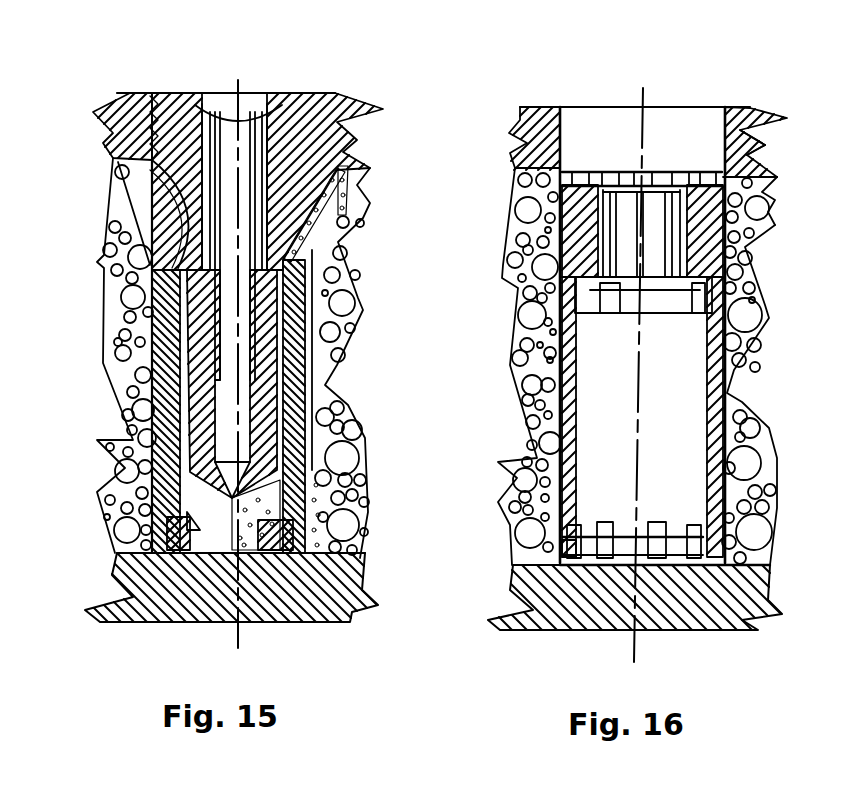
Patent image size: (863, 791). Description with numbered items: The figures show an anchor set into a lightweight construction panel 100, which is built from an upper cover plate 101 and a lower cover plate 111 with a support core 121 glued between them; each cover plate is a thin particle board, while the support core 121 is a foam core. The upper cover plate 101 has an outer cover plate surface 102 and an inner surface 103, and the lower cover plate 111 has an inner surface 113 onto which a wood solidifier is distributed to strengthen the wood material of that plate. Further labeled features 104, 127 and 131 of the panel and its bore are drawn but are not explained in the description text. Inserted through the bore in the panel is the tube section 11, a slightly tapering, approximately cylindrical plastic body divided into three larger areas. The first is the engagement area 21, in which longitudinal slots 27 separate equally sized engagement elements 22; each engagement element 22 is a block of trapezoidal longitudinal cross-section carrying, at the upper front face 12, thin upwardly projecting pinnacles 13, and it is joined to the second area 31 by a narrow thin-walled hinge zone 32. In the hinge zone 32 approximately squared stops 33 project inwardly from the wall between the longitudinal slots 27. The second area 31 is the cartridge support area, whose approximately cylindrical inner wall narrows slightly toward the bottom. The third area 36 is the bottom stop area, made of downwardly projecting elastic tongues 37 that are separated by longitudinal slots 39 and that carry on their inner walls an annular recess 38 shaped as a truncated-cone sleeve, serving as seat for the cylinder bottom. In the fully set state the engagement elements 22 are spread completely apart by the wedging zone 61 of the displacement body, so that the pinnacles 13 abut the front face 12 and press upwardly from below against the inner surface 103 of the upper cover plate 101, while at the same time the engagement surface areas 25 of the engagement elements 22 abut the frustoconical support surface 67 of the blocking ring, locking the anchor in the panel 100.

In FIG. 16, the tube section 11 is at (563, 408).
In FIG. 16, the upper front face 12 is at (620, 180).
In FIG. 15, the pinnacles 13 is at (150, 158).
In FIG. 16, the pinnacles 13 is at (515, 150).
In FIG. 16, the engagement area 21 is at (548, 204).
In FIG. 15, the engagement elements 22 is at (150, 216).
In FIG. 16, the engagement elements 22 is at (580, 228).
In FIG. 15, the engagement surface areas 25 is at (182, 258).
In FIG. 16, the engagement surface areas 25 is at (745, 250).
In FIG. 16, the longitudinal slots 27 is at (688, 233).
In FIG. 16, the second area (cartridge support area) 31 is at (547, 377).
In FIG. 16, the hinge zone 32 is at (580, 290).
In FIG. 16, the stops 33 is at (603, 296).
In FIG. 16, the third area (bottom stop area) 36 is at (510, 513).
In FIG. 16, the elastic tongues 37 is at (563, 555).
In FIG. 16, the annular recess 38 is at (543, 537).
In FIG. 16, the longitudinal slots 39 is at (540, 568).
In FIG. 15, the wedging zone 61 is at (192, 188).
In FIG. 15, the support surface 67 is at (185, 302).
In FIG. 16, the lightweight construction panel 100 is at (775, 627).
In FIG. 16, the upper cover plate 101 is at (747, 110).
In FIG. 16, the outer cover plate surface 102 is at (748, 145).
In FIG. 16, the inner surface of the upper cover plate 103 is at (752, 153).
In FIG. 16, the thread crest 104 is at (772, 182).
In FIG. 16, the lower cover plate 111 is at (735, 595).
In FIG. 16, the inner surface of the lower cover plate 113 is at (737, 565).
In FIG. 16, the support core 121 is at (758, 301).
In FIG. 16, the outer aggregate zone 127 is at (752, 357).
In FIG. 16, the outer wall 131 is at (711, 298).